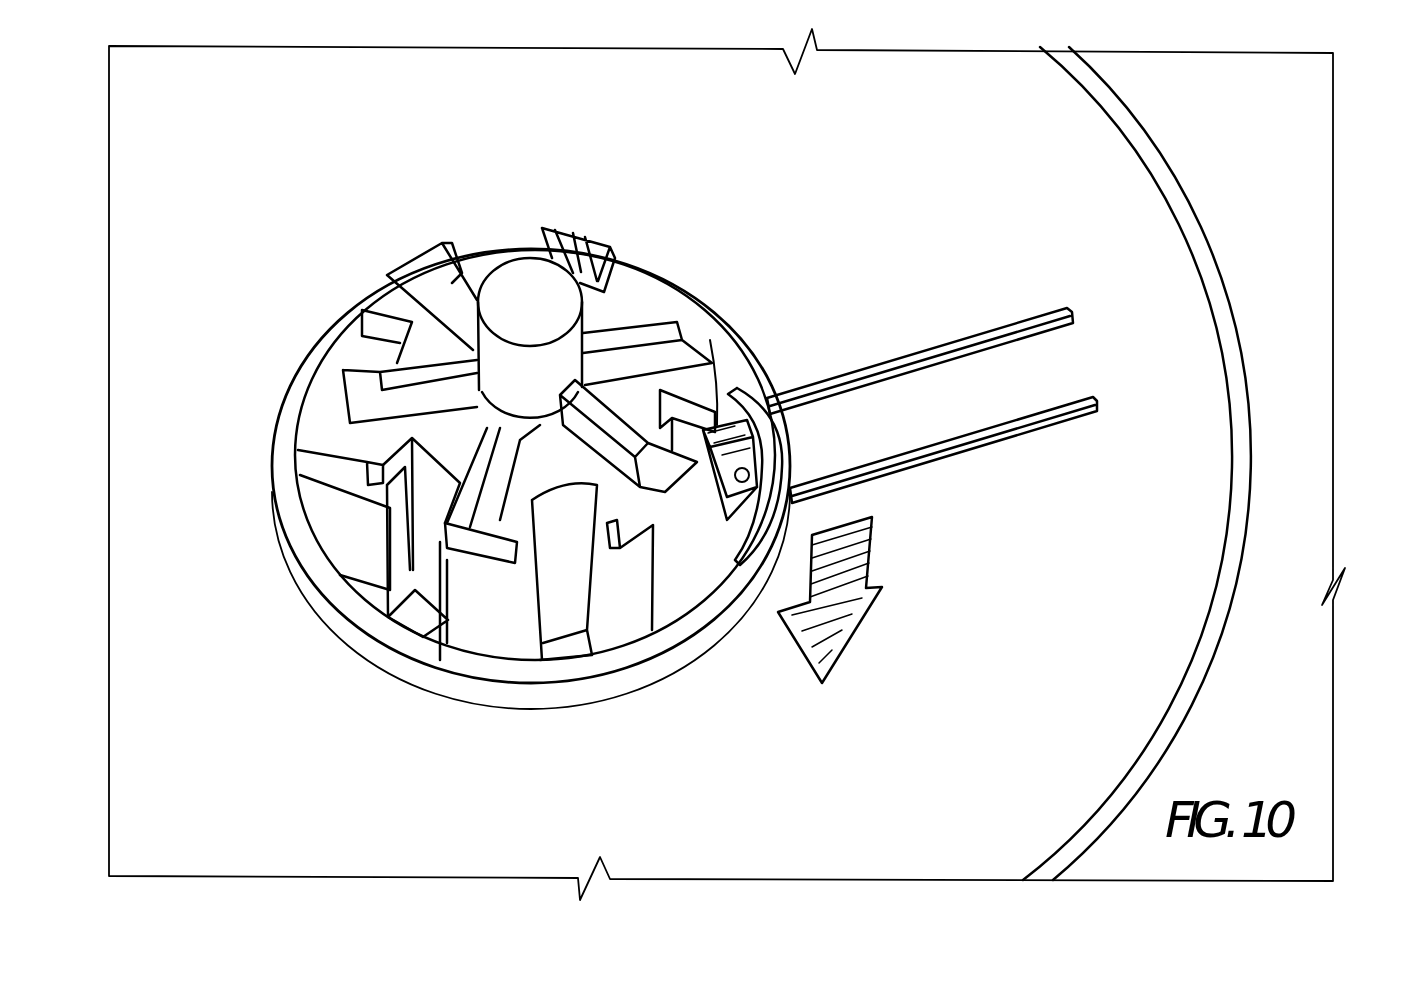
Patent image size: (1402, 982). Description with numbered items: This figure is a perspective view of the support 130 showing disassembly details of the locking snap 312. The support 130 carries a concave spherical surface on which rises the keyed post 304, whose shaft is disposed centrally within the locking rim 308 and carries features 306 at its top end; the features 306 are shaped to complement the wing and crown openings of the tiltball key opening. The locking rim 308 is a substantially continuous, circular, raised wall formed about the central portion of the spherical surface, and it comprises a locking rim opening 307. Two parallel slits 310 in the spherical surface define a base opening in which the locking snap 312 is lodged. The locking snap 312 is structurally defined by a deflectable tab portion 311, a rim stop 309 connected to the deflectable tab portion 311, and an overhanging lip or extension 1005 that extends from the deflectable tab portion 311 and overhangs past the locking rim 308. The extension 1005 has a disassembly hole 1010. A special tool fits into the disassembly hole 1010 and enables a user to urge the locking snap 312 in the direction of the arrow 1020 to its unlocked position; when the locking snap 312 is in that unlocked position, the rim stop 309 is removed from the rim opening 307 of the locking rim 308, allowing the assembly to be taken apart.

The support 130 is at (1080, 667).
The keyed post 304 is at (595, 312).
The features 306 is at (375, 440).
The locking rim opening 307 is at (720, 350).
The locking rim 308 is at (402, 643).
The rim stop 309 is at (757, 437).
The parallel slits 310 is at (1057, 407).
The deflectable tab portion 311 is at (905, 410).
The locking snap 312 is at (943, 393).
The extension 1005 is at (742, 482).
The disassembly hole 1010 is at (727, 385).
The arrow 1020 is at (835, 608).